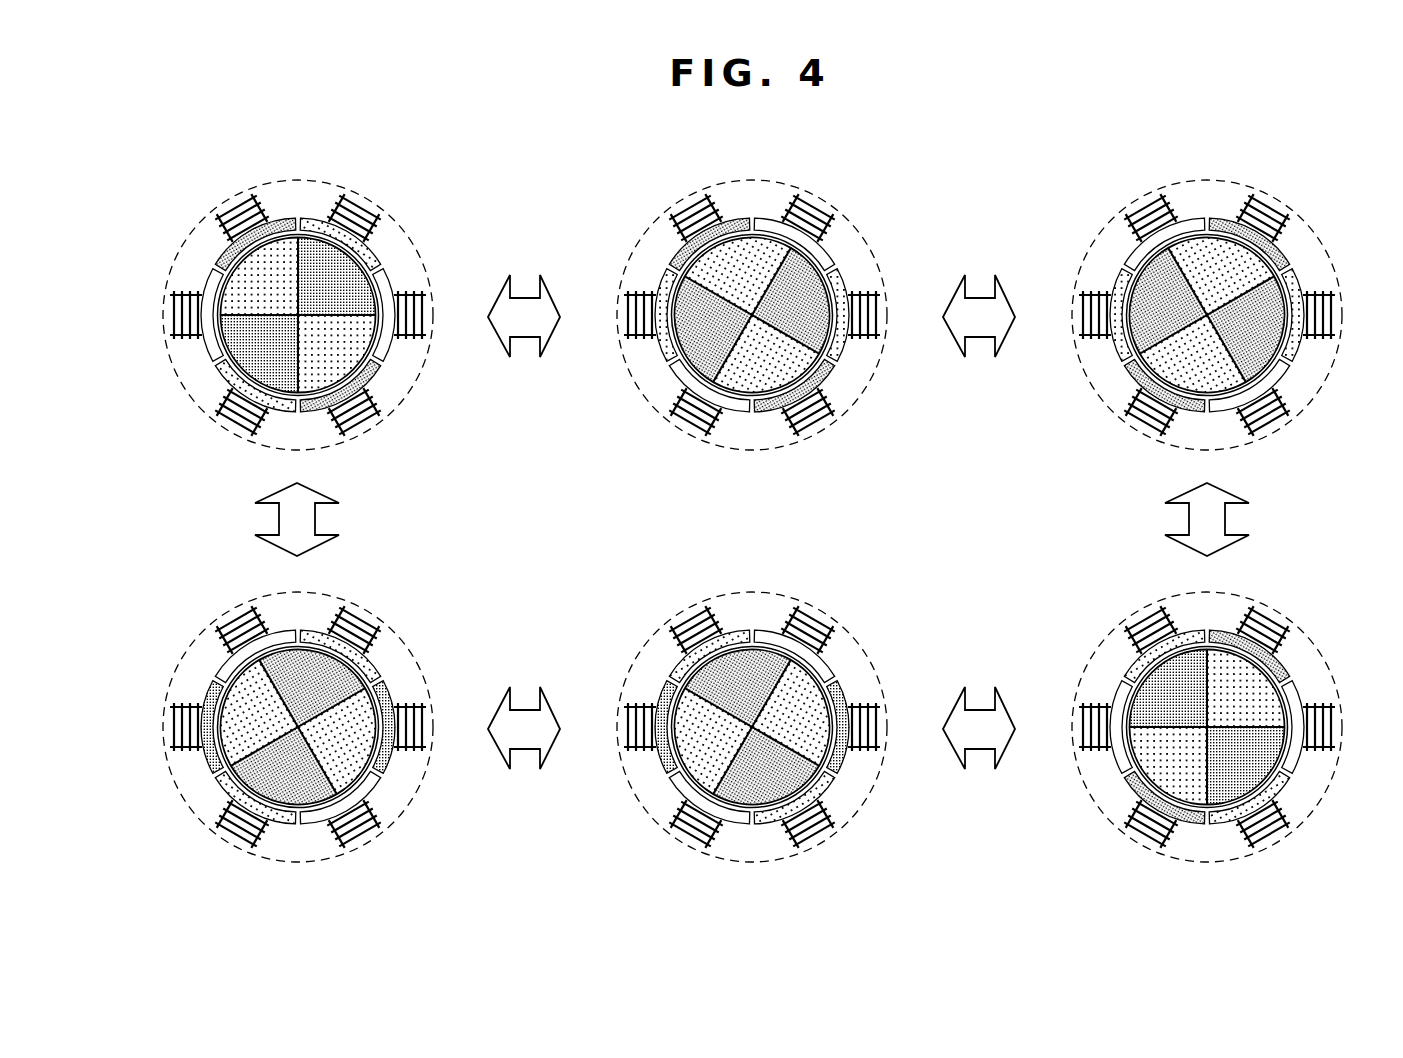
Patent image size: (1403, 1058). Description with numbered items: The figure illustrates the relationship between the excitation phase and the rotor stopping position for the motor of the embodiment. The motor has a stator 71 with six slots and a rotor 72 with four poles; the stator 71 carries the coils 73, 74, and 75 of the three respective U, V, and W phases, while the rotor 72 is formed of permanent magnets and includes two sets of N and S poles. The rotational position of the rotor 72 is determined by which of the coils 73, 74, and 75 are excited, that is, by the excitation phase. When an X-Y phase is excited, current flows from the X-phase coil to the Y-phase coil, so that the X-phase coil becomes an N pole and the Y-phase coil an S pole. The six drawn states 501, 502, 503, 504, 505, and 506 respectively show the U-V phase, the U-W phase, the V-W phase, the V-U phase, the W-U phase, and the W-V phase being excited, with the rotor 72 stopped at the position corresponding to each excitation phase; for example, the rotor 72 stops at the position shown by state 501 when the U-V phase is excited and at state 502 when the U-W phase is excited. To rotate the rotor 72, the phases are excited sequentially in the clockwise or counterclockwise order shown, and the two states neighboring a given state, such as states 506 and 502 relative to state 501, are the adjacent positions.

The stator 71 is at (744, 521).
The rotor 72 is at (779, 521).
The coil 73 is at (752, 523).
The coil 74 is at (760, 527).
The coil 75 is at (752, 521).
The U-V phase excitation state 501 is at (358, 160).
The U-W phase excitation state 502 is at (890, 202).
The V-W phase excitation state 503 is at (1280, 158).
The V-U phase excitation state 504 is at (1282, 582).
The W-U phase excitation state 505 is at (885, 620).
The W-V phase excitation state 506 is at (432, 622).